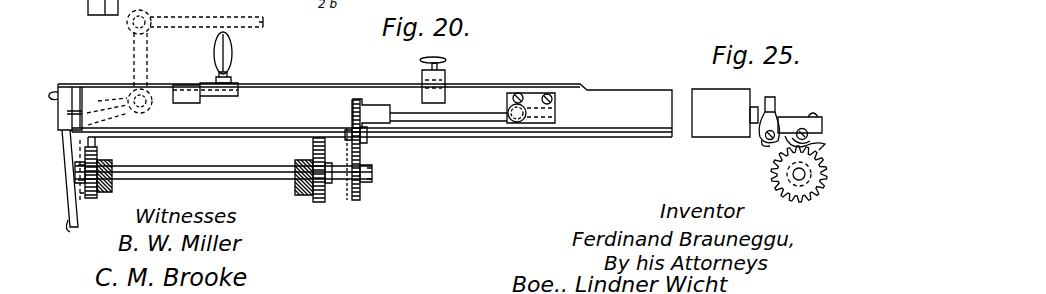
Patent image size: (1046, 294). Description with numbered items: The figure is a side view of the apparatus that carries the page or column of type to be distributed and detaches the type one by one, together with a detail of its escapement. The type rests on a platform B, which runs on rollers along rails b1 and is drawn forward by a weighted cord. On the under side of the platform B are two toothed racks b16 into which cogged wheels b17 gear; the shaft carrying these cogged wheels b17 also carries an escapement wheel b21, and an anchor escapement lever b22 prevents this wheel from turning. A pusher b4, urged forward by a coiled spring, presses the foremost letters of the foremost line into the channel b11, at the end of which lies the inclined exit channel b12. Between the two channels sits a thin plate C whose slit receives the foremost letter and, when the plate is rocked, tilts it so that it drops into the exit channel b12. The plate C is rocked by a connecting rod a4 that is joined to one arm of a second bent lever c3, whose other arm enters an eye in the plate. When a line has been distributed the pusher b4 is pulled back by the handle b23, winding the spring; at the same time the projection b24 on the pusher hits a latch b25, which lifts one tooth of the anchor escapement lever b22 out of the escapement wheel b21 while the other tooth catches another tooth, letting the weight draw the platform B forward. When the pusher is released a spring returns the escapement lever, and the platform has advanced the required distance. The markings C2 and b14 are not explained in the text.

In FIG. 20, the pusher b4 is at (303, 83).
In FIG. 20, the platform B is at (188, 133).
In FIG. 20, the plate C is at (107, 107).
In FIG. 20, the bracket C2 is at (58, 112).
In FIG. 20, the second bent lever c3 is at (146, 61).
In FIG. 20, the connecting rod a4 is at (205, 17).
In FIG. 20, the channel b11 is at (87, 2).
In FIG. 20, the handle b23 is at (232, 56).
In FIG. 20, the projection b24 is at (238, 95).
In FIG. 20, the clamp screw b14 is at (447, 60).
In FIG. 20, the latch b25 is at (352, 101).
In FIG. 25, the latch b25 is at (771, 96).
In FIG. 20, the rails b1 is at (112, 186).
In FIG. 20, the toothed racks b16 is at (97, 145).
In FIG. 20, the cogged wheels b17 is at (92, 198).
In FIG. 20, the anchor escapement lever b22 is at (362, 152).
In FIG. 25, the anchor escapement lever b22 is at (797, 116).
In FIG. 20, the escapement wheel b21 is at (362, 193).
In FIG. 25, the escapement wheel b21 is at (800, 201).
In FIG. 20, the exit channel b12 is at (63, 160).